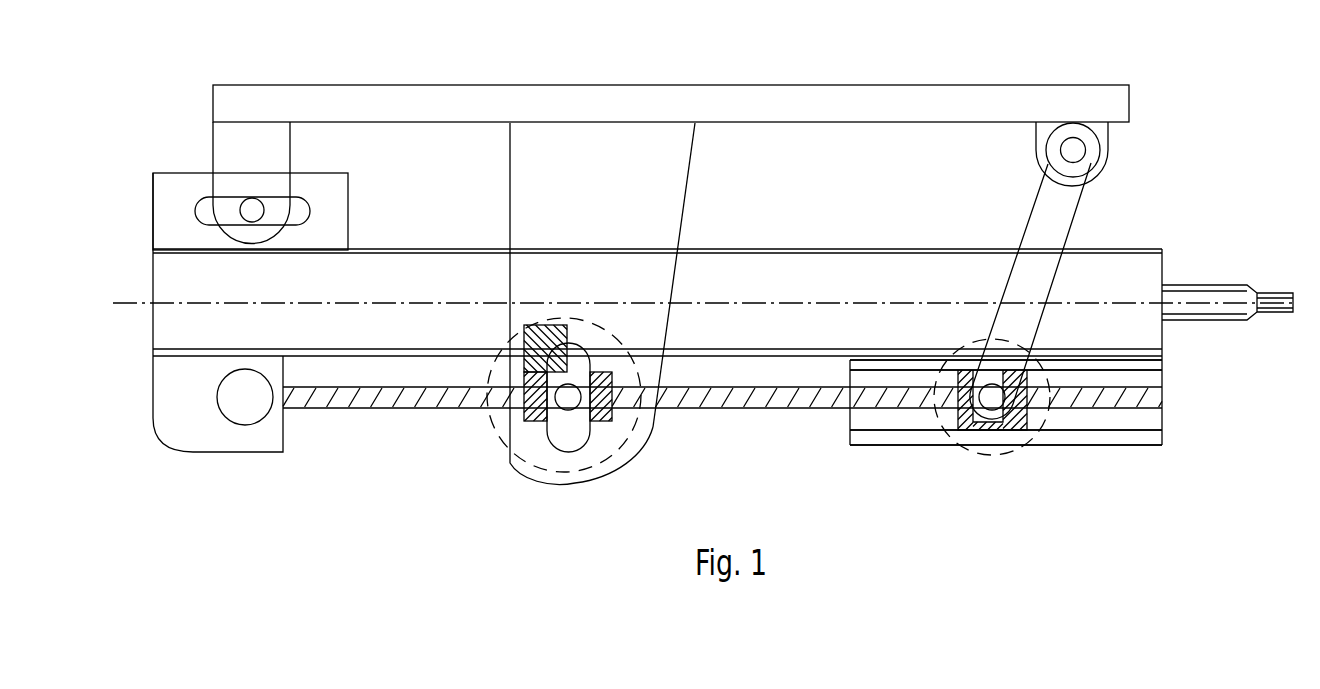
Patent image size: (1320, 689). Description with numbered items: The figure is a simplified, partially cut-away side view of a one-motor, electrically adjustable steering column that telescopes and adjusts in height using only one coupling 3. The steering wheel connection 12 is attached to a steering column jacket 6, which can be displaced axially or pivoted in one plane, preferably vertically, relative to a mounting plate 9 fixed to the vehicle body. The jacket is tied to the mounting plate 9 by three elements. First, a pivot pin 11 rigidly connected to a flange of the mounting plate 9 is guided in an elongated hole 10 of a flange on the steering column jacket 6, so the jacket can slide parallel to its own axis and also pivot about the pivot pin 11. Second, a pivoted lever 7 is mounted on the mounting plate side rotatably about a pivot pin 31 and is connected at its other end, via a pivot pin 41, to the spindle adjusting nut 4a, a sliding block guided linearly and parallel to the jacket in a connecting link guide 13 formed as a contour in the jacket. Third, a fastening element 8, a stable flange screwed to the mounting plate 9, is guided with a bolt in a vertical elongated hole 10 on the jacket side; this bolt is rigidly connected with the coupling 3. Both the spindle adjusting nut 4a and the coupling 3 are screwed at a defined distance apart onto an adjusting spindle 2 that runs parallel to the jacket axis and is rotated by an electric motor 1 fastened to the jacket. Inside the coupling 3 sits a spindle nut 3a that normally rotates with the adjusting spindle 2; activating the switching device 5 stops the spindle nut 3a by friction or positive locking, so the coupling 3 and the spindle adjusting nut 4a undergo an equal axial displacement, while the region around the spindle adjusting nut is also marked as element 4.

The electric motor 1 is at (240, 408).
The adjusting spindle 2 is at (335, 408).
The coupling 3 is at (501, 431).
The spindle nut 3a is at (612, 418).
The slide block 4 is at (950, 430).
The spindle adjusting nut 4a is at (963, 432).
The switching device 5 is at (540, 340).
The steering column jacket 6 is at (787, 275).
The pivoted lever 7 is at (1070, 205).
The fastening element 8 is at (662, 169).
The mounting plate 9 is at (754, 87).
The elongated hole 10 is at (200, 212).
The pivot pin 11 is at (250, 210).
The steering wheel connection 12 is at (1255, 318).
The connecting link guide 13 is at (1162, 362).
The pivot pin 31 is at (1080, 150).
The pivot pin 41 is at (992, 400).